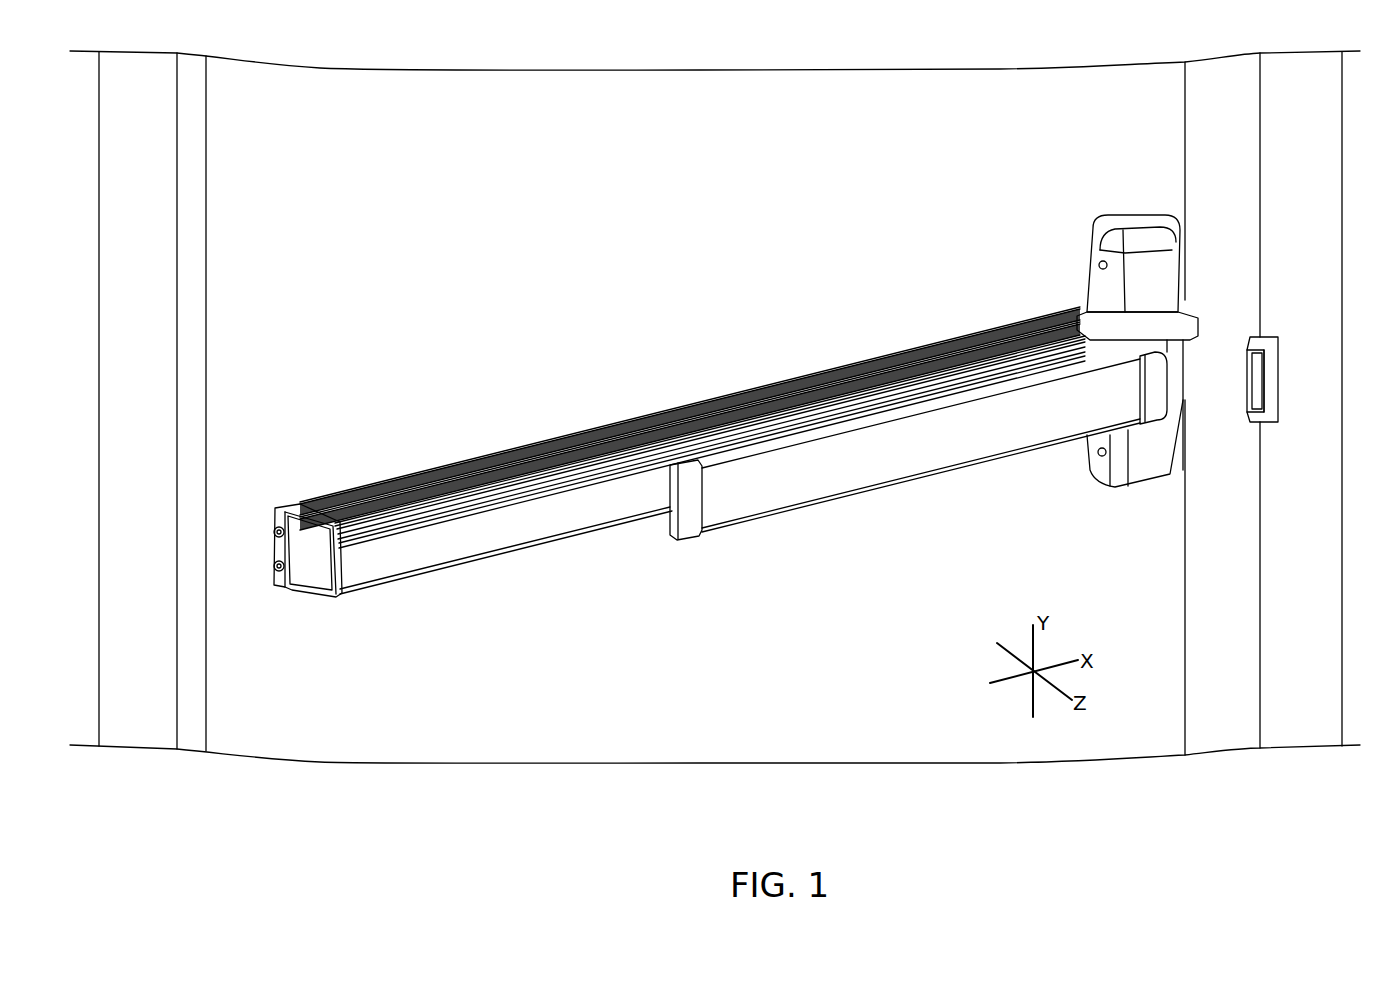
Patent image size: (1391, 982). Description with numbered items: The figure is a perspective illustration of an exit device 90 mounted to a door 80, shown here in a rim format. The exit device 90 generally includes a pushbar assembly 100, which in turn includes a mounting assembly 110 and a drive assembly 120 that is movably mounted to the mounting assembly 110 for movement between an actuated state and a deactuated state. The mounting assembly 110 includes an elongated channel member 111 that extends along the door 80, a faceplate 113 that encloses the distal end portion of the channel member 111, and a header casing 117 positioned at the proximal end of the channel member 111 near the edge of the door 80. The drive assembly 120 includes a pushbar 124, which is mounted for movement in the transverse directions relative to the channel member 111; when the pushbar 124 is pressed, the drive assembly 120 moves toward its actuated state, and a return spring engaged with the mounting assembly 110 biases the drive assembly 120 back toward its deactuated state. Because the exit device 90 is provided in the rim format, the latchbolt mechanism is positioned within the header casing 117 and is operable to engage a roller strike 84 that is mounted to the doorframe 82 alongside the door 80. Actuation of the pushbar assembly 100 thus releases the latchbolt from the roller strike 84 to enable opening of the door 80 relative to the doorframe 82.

The door 80 is at (417, 87).
The doorframe 82 is at (1313, 250).
The roller strike 84 is at (1292, 338).
The exit device 90 is at (610, 222).
The pushbar assembly 100 is at (893, 272).
The mounting assembly 110 is at (455, 424).
The channel member 111 is at (637, 440).
The faceplate 113 is at (406, 563).
The header casing 117 is at (1130, 215).
The drive assembly 120 is at (814, 552).
The pushbar 124 is at (907, 463).